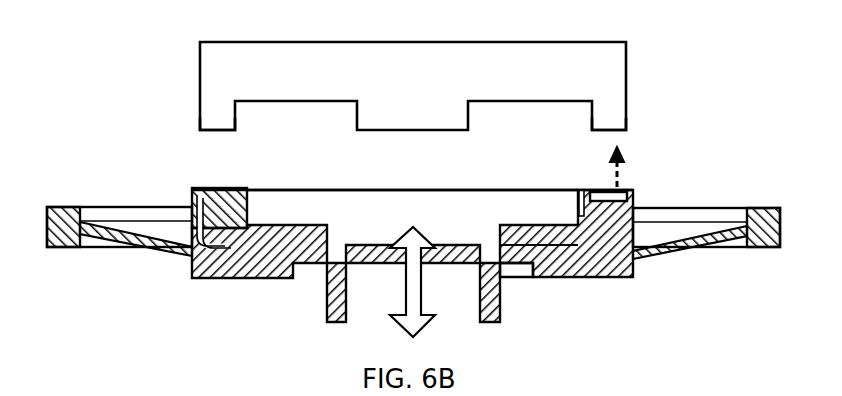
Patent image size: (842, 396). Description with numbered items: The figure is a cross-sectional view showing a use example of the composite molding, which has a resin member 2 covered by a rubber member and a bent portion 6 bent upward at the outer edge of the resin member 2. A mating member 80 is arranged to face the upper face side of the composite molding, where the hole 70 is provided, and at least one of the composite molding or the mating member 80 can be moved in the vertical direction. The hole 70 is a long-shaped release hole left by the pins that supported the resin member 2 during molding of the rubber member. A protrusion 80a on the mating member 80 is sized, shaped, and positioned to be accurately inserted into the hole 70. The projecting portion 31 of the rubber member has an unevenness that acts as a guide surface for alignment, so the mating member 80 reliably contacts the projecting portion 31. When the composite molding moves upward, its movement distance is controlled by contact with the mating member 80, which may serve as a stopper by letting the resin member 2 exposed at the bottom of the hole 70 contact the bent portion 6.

The mating member 80 is at (618, 77).
The protrusion 80a is at (618, 117).
The projecting portion 31 is at (580, 210).
The hole 70 is at (630, 193).
The bent portion 6 is at (618, 237).
The resin member 2 is at (572, 257).